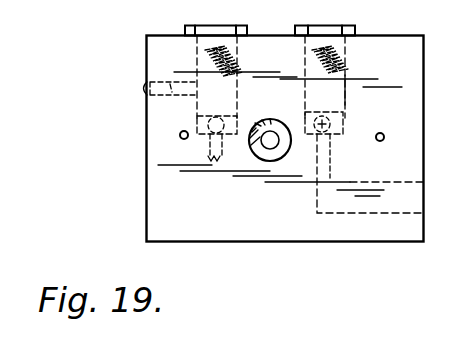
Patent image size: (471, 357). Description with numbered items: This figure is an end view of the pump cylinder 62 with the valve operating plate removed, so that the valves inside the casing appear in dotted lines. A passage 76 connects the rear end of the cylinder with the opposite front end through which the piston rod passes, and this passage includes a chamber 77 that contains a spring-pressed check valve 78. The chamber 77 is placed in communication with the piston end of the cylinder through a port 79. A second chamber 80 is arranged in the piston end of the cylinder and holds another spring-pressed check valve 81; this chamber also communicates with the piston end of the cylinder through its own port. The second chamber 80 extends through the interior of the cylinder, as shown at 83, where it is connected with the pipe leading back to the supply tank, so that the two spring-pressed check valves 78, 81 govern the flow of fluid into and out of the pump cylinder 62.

The pump cylinder 62 is at (144, 197).
The passage 76 is at (145, 86).
The chamber 77 is at (240, 72).
The spring-pressed check valve 78 is at (209, 124).
The port 79 is at (216, 170).
The second chamber 80 is at (353, 82).
The spring-pressed check valve 81 is at (345, 117).
The extension of second chamber 83 is at (425, 196).